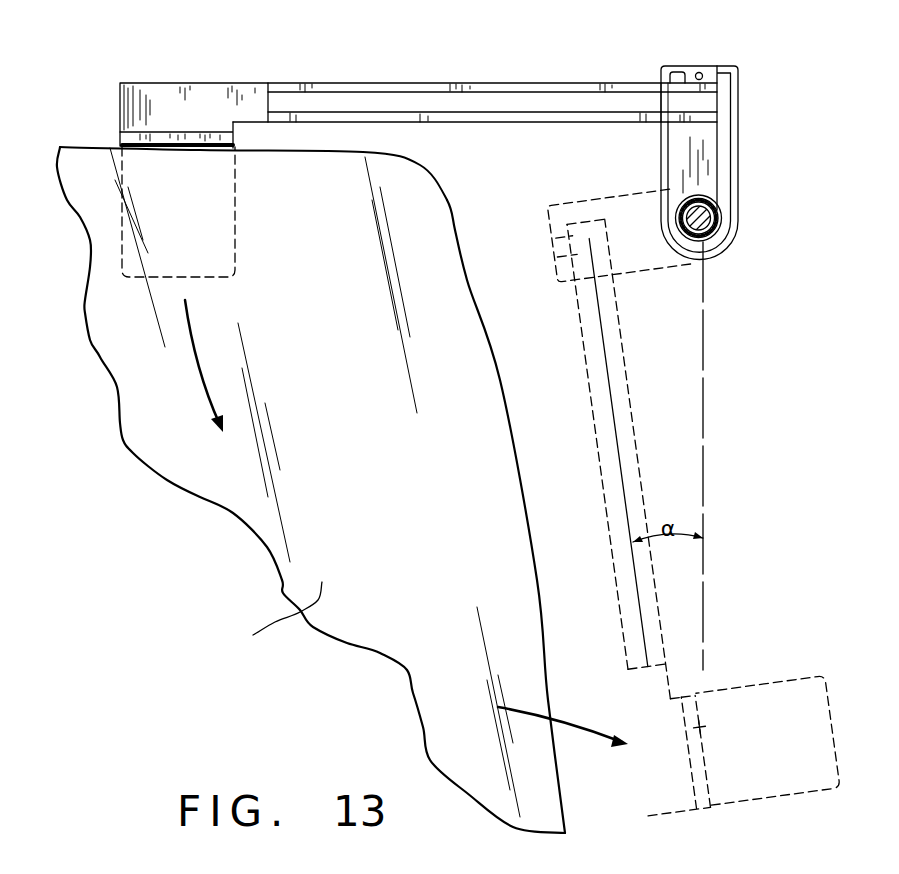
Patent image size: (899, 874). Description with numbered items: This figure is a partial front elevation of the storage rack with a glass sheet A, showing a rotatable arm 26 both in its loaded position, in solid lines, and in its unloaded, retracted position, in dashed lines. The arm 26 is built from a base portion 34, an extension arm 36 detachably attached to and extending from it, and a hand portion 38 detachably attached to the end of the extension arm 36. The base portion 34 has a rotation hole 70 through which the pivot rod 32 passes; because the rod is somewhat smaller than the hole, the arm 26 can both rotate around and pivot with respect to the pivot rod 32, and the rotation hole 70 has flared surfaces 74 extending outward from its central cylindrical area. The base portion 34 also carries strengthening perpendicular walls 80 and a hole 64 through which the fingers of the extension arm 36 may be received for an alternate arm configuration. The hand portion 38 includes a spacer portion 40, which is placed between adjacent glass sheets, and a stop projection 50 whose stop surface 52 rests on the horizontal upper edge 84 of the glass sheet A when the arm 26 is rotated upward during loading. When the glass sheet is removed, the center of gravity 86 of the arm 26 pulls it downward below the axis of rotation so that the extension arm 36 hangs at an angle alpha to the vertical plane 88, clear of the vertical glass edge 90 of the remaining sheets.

The rotatable arm 26 is at (447, 80).
The pivot rod 32 is at (693, 235).
The base portion 34 is at (712, 145).
The extension arm 36 is at (535, 102).
The hand portion 38 is at (193, 92).
The spacer portion 40 is at (123, 230).
The stop projection 50 is at (118, 137).
The stop surface 52 is at (204, 149).
The hole 64 is at (699, 72).
The rotation hole 70 is at (722, 216).
The flared surface 74 is at (722, 242).
The strengthening perpendicular wall 80 is at (665, 144).
The horizontal upper edge 84 is at (77, 146).
The center of gravity 86 is at (702, 722).
The vertical plane 88 is at (703, 492).
The vertical glass edge 90 is at (513, 442).
The glass sheet A is at (277, 617).